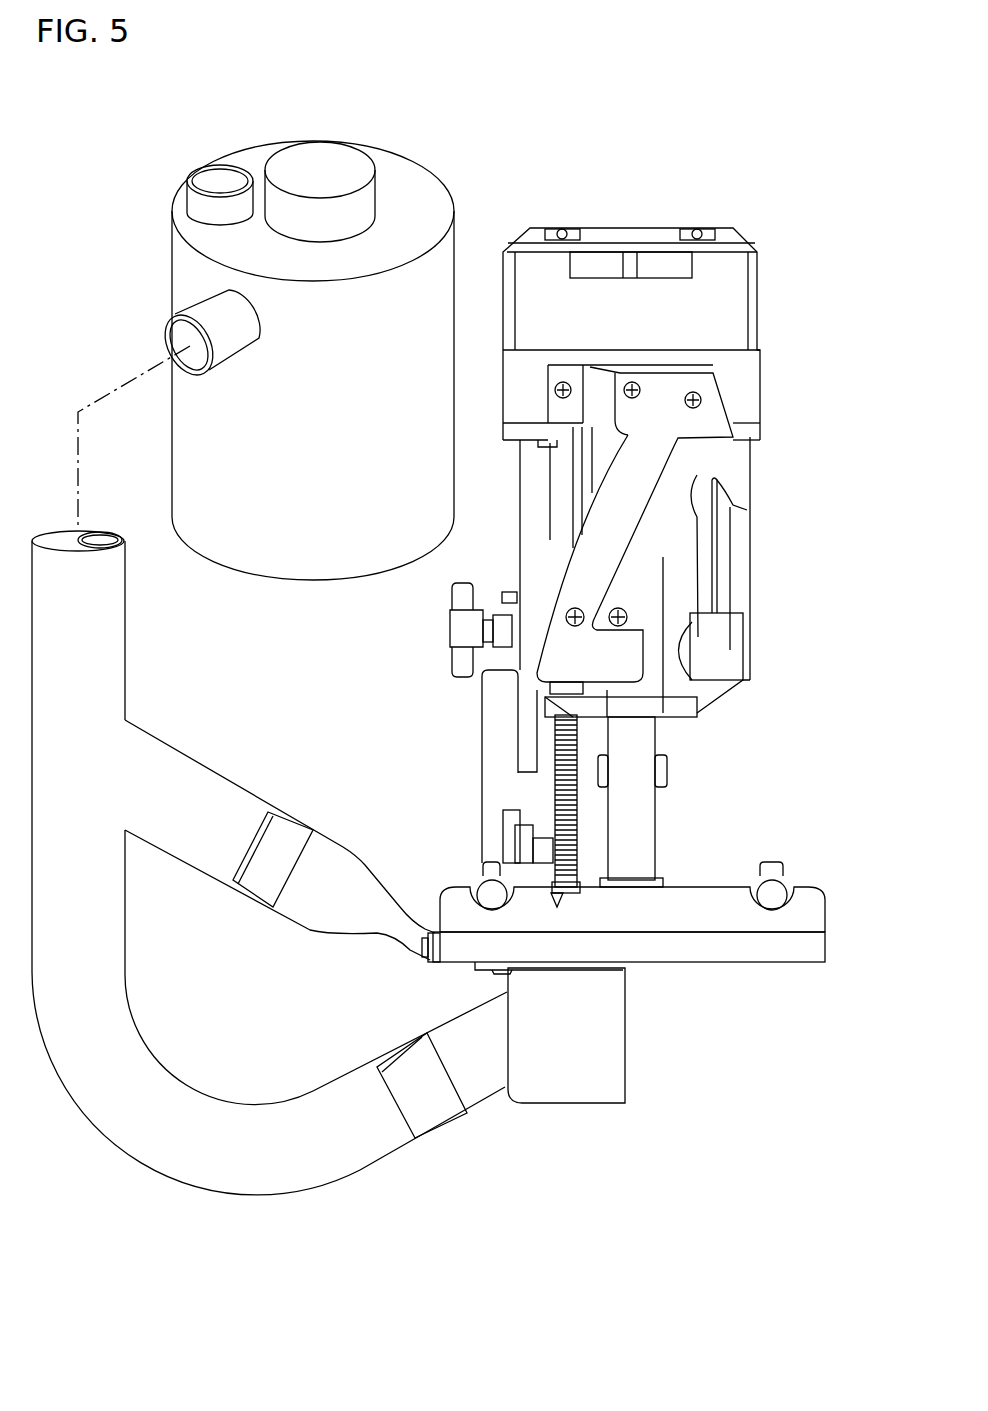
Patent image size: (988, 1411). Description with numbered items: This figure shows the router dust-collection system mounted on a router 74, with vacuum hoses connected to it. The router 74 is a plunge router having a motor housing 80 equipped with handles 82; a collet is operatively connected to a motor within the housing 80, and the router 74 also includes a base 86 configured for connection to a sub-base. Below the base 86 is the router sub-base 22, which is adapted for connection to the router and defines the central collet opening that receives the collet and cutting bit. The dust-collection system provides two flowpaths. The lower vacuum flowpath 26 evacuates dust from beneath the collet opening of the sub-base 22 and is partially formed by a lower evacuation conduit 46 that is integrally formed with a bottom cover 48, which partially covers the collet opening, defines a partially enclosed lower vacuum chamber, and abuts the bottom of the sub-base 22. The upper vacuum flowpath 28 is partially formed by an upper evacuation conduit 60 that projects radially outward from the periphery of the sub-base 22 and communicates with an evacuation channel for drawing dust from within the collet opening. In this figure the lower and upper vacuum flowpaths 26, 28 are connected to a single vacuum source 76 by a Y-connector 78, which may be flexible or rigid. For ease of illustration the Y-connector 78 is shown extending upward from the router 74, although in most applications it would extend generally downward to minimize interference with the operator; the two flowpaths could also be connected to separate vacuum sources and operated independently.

The router sub-base 22 is at (765, 962).
The lower vacuum flowpath 26 is at (449, 1021).
The upper vacuum flowpath 28 is at (403, 912).
The lower evacuation conduit 46 is at (482, 1097).
The bottom cover 48 is at (580, 1103).
The upper evacuation conduit 60 is at (339, 848).
The router 74 is at (652, 567).
The vacuum source 76 is at (431, 172).
The Y-connector 78 is at (193, 760).
The motor housing 80 is at (758, 287).
The handles 82 is at (678, 467).
The base 86 is at (818, 889).